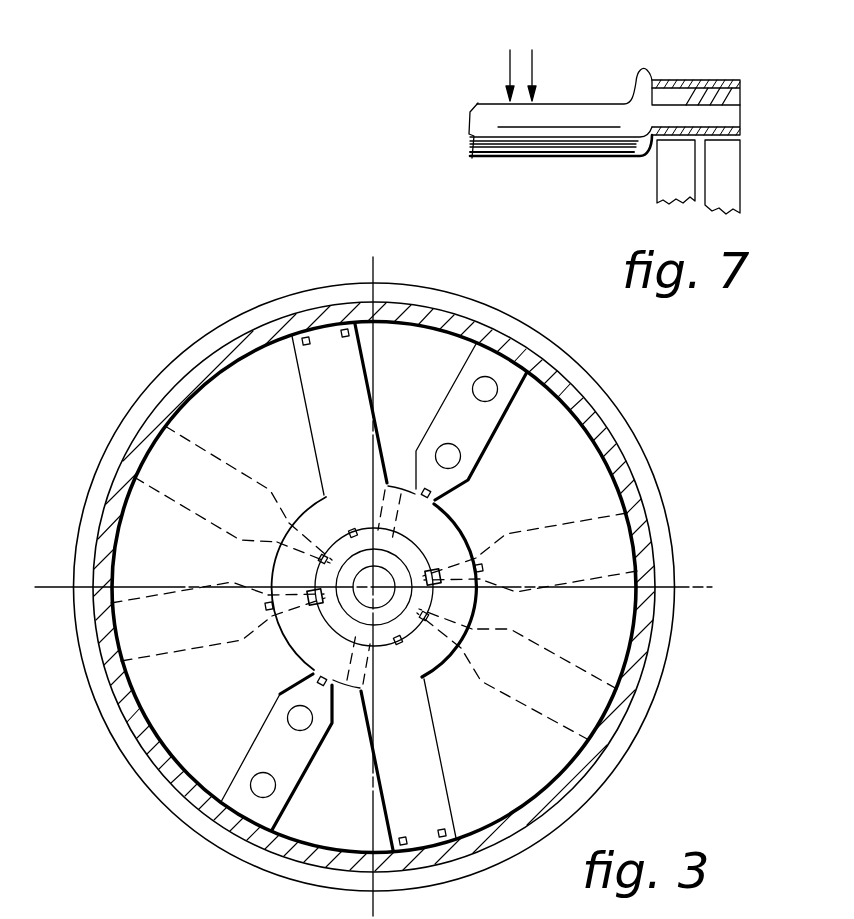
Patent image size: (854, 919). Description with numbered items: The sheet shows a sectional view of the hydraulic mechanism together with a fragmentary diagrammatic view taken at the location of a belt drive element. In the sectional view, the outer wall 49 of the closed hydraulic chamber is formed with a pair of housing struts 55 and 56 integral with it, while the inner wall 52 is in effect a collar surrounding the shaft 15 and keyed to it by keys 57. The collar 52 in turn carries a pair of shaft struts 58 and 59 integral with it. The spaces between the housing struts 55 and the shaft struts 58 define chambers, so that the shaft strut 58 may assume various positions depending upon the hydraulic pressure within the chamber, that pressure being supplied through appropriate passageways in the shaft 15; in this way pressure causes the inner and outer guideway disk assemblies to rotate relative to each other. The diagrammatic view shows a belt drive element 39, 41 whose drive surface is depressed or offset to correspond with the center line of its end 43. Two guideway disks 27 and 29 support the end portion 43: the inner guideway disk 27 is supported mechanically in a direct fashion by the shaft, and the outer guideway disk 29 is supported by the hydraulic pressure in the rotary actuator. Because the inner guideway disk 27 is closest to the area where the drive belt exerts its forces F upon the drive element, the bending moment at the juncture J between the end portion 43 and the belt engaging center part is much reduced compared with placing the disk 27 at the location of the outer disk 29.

In FIG. 3, the shaft 15 is at (482, 610).
In FIG. 3, the outer wall 49 is at (607, 443).
In FIG. 3, the inner wall 52 is at (458, 632).
In FIG. 3, the housing strut 55 is at (655, 514).
In FIG. 3, the housing strut 56 is at (157, 642).
In FIG. 3, the key 57 is at (435, 572).
In FIG. 3, the shaft strut 58 is at (418, 787).
In FIG. 3, the shaft strut 59 is at (385, 322).
In FIG. 7, the inner guideway disk 27 is at (668, 177).
In FIG. 7, the outer guideway disk 29 is at (730, 168).
In FIG. 7, the belt drive element 39 is at (537, 157).
In FIG. 7, the belt drive element 41 is at (514, 186).
In FIG. 7, the end portion 43 is at (730, 97).
In FIG. 7, the forces F is at (523, 58).
In FIG. 7, the juncture J is at (650, 68).